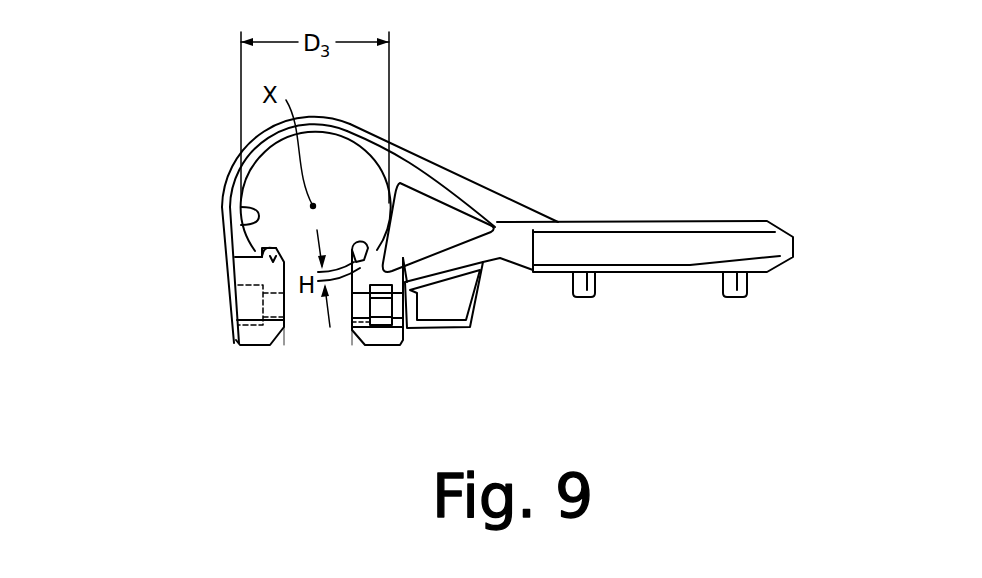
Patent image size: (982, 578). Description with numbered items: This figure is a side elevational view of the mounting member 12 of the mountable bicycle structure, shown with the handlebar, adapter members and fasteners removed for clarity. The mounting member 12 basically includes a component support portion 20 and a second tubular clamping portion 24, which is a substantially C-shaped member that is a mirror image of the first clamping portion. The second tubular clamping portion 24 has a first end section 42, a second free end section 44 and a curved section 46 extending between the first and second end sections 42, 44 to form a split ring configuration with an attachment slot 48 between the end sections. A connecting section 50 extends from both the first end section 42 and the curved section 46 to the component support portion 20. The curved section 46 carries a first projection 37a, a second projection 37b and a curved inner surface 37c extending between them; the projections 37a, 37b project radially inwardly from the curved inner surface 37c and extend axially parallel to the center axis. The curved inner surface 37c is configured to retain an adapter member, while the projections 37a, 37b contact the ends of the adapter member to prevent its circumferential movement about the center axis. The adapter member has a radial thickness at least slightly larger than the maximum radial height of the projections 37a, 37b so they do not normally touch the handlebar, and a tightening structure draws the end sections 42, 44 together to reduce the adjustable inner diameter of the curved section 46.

The mounting member 12 is at (718, 130).
The component support portion 20 is at (781, 211).
The second tubular clamping portion 24 is at (400, 134).
The first projection 37a is at (357, 220).
The second projection 37b is at (252, 252).
The curved inner surface 37c is at (247, 226).
The curved section 46 is at (233, 186).
The connecting section 50 is at (474, 176).
The second end section 44 is at (252, 347).
The first end section 42 is at (383, 320).
The attachment slot 48 is at (313, 342).